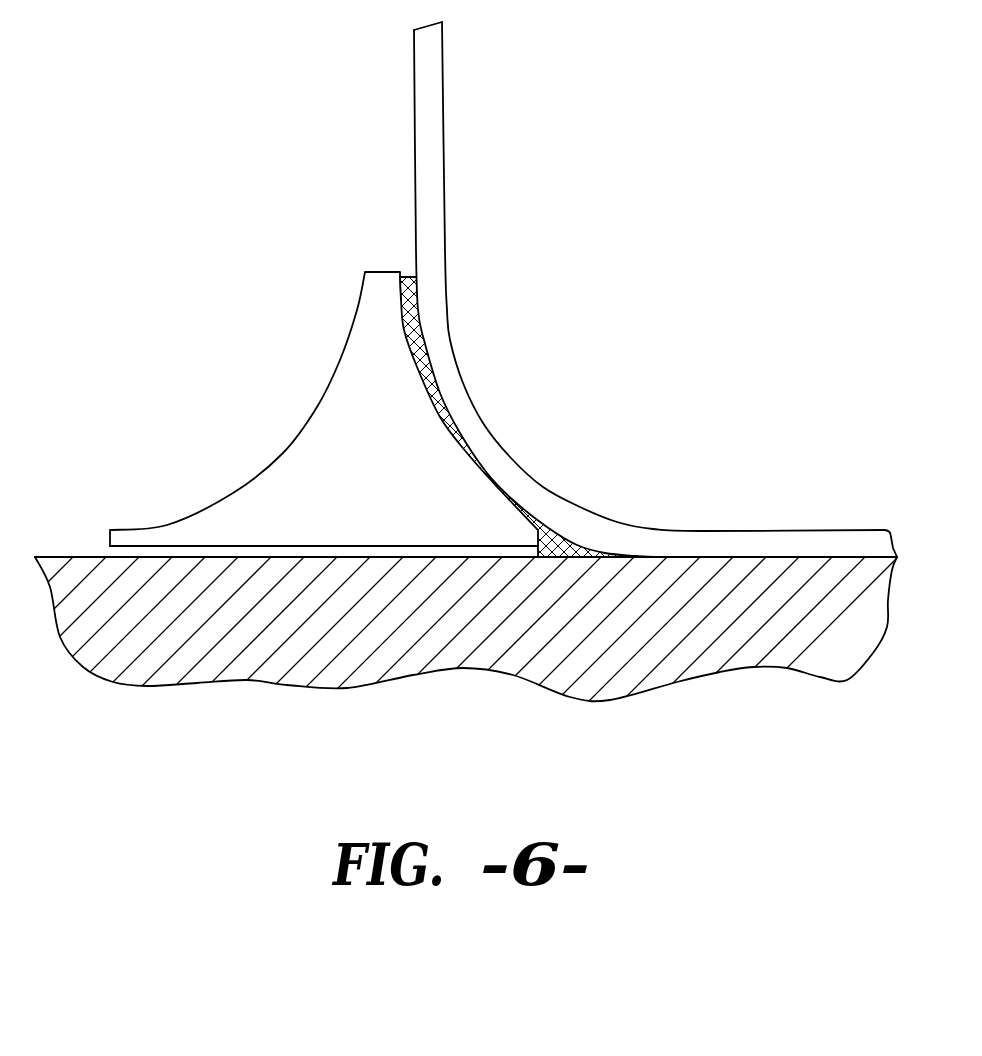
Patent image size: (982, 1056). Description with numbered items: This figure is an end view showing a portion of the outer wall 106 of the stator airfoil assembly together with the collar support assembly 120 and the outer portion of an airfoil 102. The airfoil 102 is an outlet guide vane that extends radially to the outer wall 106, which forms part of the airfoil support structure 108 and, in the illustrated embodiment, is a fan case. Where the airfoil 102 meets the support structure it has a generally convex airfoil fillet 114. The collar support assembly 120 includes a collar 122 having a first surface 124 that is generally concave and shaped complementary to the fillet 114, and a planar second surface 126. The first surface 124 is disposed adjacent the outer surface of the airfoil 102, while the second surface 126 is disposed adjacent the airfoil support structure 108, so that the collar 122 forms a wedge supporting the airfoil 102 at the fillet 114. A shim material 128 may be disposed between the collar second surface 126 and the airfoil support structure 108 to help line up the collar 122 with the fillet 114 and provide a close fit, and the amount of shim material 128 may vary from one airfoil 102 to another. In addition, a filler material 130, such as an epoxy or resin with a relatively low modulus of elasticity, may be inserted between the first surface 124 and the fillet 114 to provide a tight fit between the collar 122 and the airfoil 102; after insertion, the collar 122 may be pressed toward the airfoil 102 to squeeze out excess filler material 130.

The airfoil 102 is at (430, 112).
The outer wall 106 is at (795, 588).
The airfoil support structure 108 is at (77, 546).
The airfoil fillet 114 is at (460, 410).
The collar support assembly 120 is at (310, 297).
The collar 122 is at (318, 497).
The first surface 124 is at (490, 495).
The second surface 126 is at (473, 547).
The shim material 128 is at (220, 552).
The filler material 130 is at (407, 272).